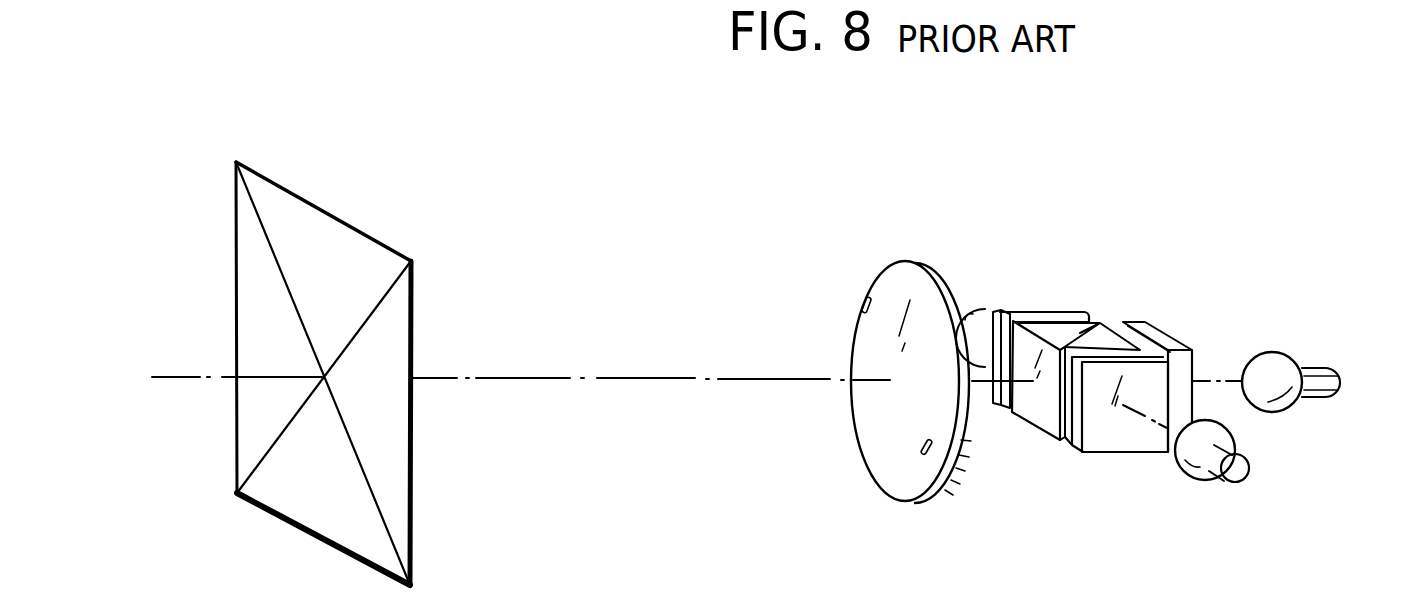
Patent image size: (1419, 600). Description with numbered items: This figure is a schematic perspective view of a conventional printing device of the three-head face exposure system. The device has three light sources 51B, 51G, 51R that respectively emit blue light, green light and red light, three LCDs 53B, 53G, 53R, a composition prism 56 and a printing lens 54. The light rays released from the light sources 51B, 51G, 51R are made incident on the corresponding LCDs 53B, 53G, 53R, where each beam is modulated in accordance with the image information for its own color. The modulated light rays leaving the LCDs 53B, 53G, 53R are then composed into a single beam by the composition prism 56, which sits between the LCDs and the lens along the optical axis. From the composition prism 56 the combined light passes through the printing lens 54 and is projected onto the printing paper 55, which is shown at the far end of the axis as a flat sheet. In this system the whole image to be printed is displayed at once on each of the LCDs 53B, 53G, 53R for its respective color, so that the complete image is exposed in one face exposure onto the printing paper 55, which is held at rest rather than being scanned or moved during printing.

The light source 51R is at (977, 310).
The light source 51G is at (1278, 362).
The light source 51B is at (1243, 438).
The LCD 53R is at (1052, 308).
The LCD 53G is at (1162, 327).
The LCD 53B is at (1110, 445).
The printing lens 54 is at (877, 278).
The printing paper 55 is at (343, 222).
The composition prism 56 is at (1042, 422).